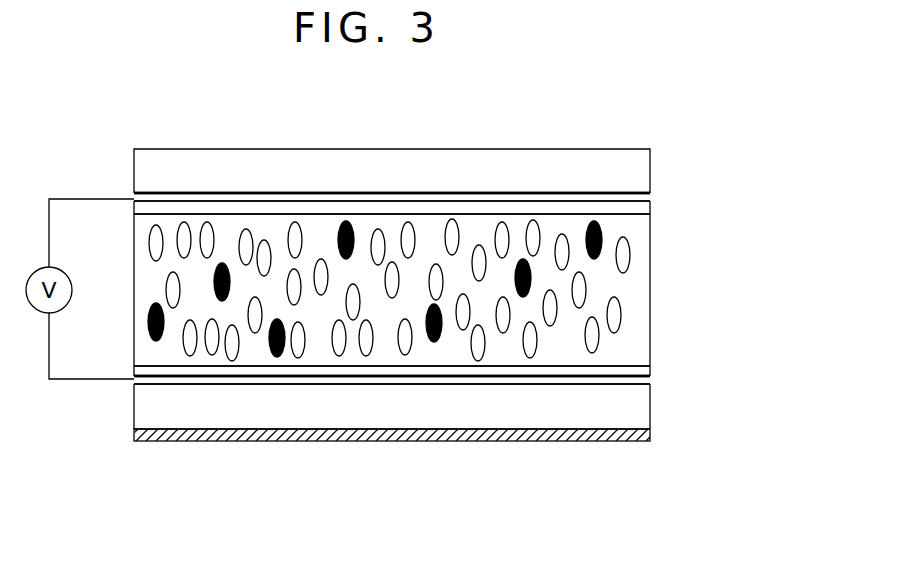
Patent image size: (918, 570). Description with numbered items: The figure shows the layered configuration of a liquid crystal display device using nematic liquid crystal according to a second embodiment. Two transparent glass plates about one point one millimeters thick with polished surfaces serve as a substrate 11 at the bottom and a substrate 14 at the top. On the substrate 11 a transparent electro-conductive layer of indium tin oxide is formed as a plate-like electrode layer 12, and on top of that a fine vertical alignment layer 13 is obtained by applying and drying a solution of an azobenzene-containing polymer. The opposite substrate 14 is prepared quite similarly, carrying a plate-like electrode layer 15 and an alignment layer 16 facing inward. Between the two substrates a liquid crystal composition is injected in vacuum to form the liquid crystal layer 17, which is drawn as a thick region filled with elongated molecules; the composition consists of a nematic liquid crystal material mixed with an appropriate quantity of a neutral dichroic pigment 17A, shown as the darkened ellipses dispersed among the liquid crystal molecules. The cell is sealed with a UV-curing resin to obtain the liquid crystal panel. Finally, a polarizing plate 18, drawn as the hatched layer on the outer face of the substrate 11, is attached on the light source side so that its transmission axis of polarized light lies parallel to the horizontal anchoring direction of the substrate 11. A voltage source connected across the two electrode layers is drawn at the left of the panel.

The substrate 11 is at (651, 406).
The electrode layer 12 is at (651, 379).
The vertical alignment layer 13 is at (651, 370).
The substrate 14 is at (651, 172).
The electrode layer 15 is at (651, 198).
The alignment layer 16 is at (651, 207).
The liquid crystal layer 17 is at (651, 291).
The dichroic pigment 17A is at (602, 241).
The polarizing plate 18 is at (651, 435).